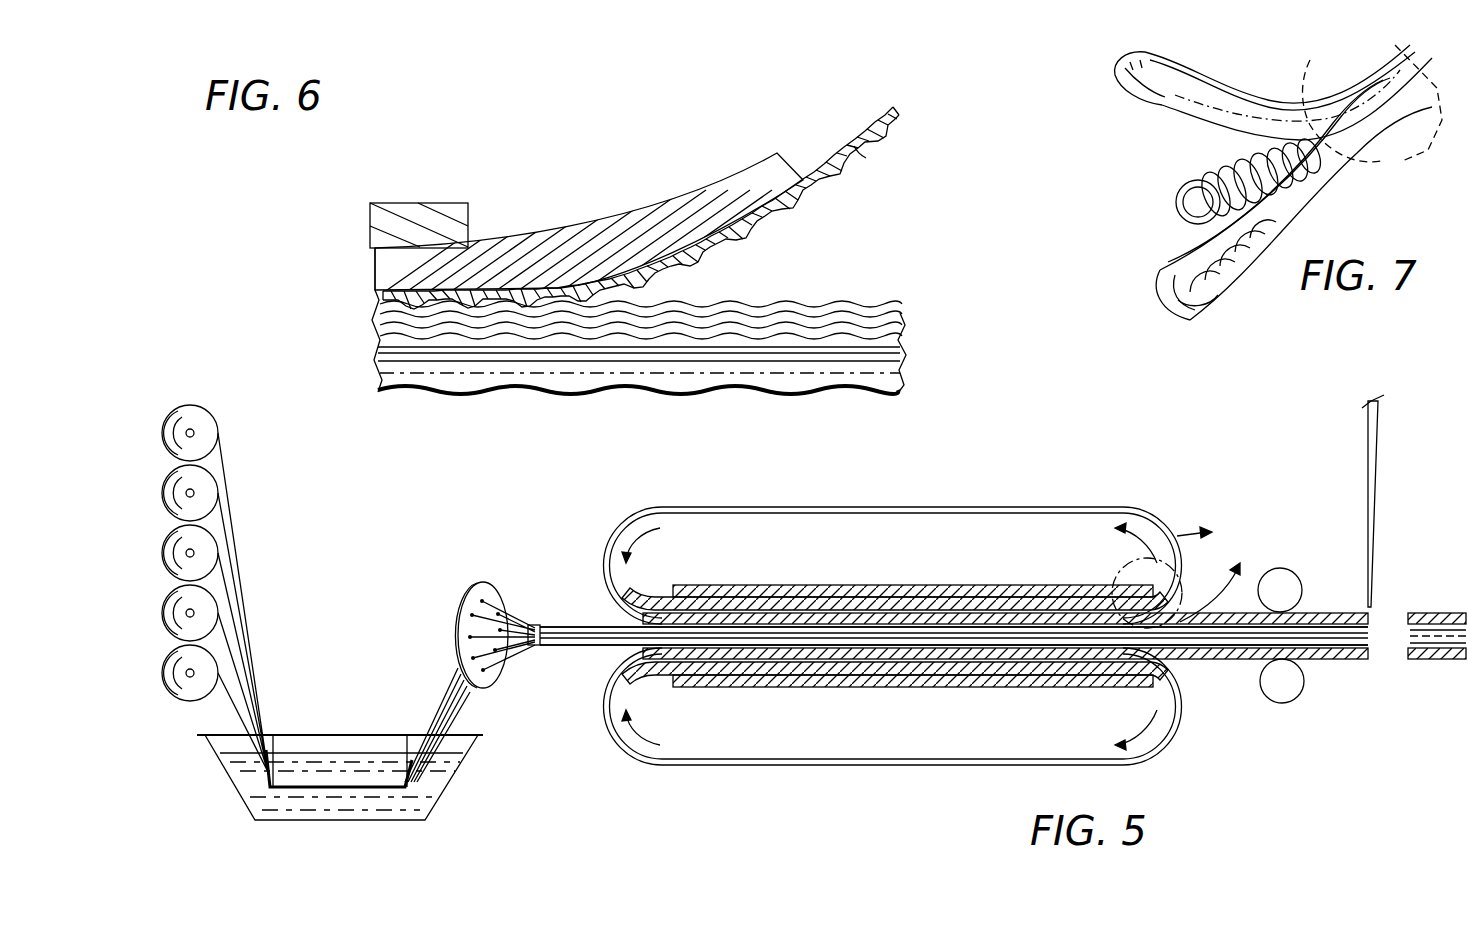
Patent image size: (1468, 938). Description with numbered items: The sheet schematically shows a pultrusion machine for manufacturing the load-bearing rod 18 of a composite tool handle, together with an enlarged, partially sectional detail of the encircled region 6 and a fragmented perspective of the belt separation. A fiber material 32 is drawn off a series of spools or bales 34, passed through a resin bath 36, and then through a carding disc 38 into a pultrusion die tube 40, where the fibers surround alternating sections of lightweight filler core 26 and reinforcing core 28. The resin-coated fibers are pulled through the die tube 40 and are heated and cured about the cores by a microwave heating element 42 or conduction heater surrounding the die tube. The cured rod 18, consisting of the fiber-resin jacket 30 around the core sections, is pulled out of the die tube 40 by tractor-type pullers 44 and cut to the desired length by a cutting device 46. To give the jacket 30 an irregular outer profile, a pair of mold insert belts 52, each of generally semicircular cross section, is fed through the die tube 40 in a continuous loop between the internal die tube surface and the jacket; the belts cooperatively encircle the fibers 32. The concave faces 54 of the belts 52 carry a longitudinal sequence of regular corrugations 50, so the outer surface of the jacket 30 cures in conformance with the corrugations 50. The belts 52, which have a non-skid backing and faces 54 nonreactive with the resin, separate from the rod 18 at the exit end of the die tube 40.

In FIG. 6, the load-bearing rod 18 is at (755, 362).
In FIG. 7, the load-bearing rod 18 is at (1205, 221).
In FIG. 5, the load-bearing rod 18 is at (1208, 660).
In FIG. 5, the lightweight filler core 26 is at (585, 620).
In FIG. 7, the reinforcing core 28 is at (1188, 198).
In FIG. 5, the reinforcing core 28 is at (936, 581).
In FIG. 6, the fiber-resin jacket 30 is at (860, 310).
In FIG. 5, the fiber-resin jacket 30 is at (1352, 660).
In FIG. 5, the fiber material 32 is at (225, 680).
In FIG. 5, the spools or bales 34 is at (173, 480).
In FIG. 5, the resin bath 36 is at (412, 812).
In FIG. 5, the carding disc 38 is at (502, 675).
In FIG. 6, the pultrusion die tube 40 is at (624, 232).
In FIG. 7, the pultrusion die tube 40 is at (1396, 160).
In FIG. 5, the pultrusion die tube 40 is at (652, 590).
In FIG. 6, the microwave heating element 42 is at (433, 200).
In FIG. 5, the microwave heating element 42 is at (937, 585).
In FIG. 5, the tractor-type pullers 44 is at (1286, 572).
In FIG. 5, the cutting device 46 is at (1366, 466).
In FIG. 6, the corrugations 50 is at (787, 306).
In FIG. 6, the mold insert belts 52 is at (905, 113).
In FIG. 7, the mold insert belts 52 is at (1162, 100).
In FIG. 5, the mold insert belts 52 is at (1050, 506).
In FIG. 6, the concave faces 54 is at (873, 158).
In FIG. 5, the encircled region 6 is at (1176, 574).